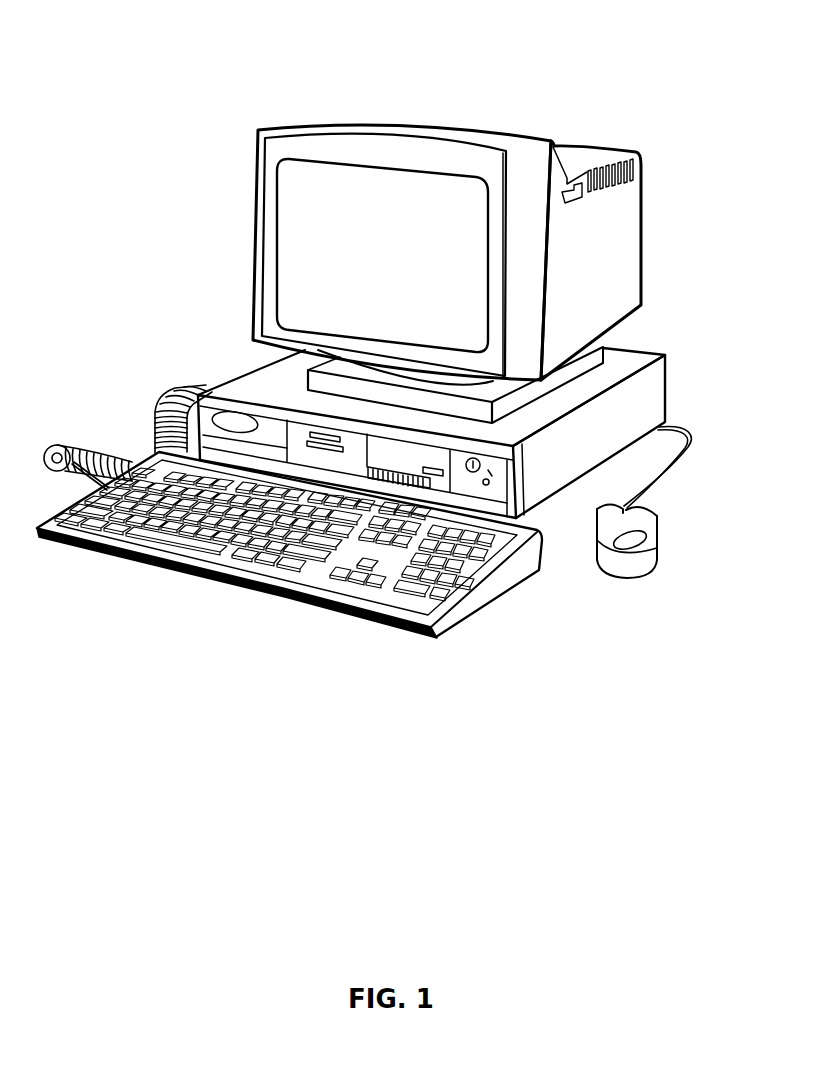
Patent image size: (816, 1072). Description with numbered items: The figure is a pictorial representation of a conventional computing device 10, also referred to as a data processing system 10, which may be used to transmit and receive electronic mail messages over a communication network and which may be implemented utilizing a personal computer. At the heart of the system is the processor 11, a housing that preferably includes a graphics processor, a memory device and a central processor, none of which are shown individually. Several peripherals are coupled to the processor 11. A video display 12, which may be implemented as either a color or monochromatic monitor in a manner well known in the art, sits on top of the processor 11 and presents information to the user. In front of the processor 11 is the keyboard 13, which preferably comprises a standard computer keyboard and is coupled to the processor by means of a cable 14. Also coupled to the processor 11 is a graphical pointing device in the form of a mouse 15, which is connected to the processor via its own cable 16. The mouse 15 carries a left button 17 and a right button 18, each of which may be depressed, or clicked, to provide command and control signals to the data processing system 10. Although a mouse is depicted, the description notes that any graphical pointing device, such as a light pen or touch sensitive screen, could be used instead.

The computing device 10 is at (537, 107).
The processor 11 is at (652, 385).
The video display 12 is at (253, 287).
The keyboard 13 is at (287, 607).
The cable 14 is at (165, 398).
The mouse 15 is at (642, 570).
The cable 16 is at (670, 468).
The left button 17 is at (600, 518).
The right button 18 is at (652, 522).